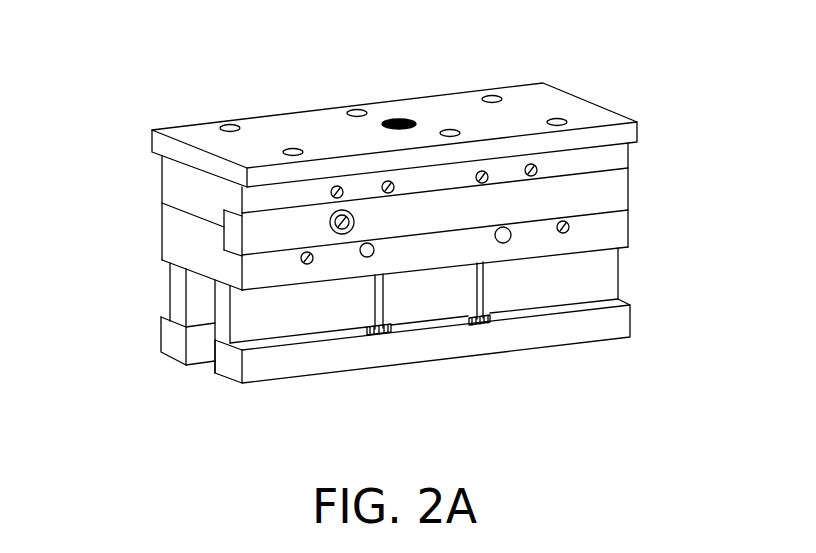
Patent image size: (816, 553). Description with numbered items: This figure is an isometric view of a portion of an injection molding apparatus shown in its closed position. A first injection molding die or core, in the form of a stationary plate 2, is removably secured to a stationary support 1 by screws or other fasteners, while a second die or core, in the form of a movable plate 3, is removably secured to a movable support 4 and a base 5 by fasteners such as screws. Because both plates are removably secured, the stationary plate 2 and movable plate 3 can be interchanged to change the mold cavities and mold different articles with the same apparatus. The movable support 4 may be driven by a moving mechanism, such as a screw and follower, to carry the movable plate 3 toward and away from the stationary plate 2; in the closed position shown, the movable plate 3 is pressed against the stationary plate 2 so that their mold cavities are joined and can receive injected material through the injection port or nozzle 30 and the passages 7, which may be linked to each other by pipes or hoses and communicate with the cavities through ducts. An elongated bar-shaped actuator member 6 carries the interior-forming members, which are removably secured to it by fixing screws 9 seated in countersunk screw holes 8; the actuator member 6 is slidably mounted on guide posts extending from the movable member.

The stationary support 1 is at (196, 134).
The stationary plate 2 is at (177, 182).
The movable plate 3 is at (181, 240).
The movable support 4 is at (177, 297).
The base 5 is at (355, 357).
The actuator member 6 is at (609, 192).
The passages 7 is at (533, 166).
The countersunk screw holes 8 is at (332, 233).
The fixing screws 9 is at (354, 219).
The injection port or nozzle 30 is at (398, 117).